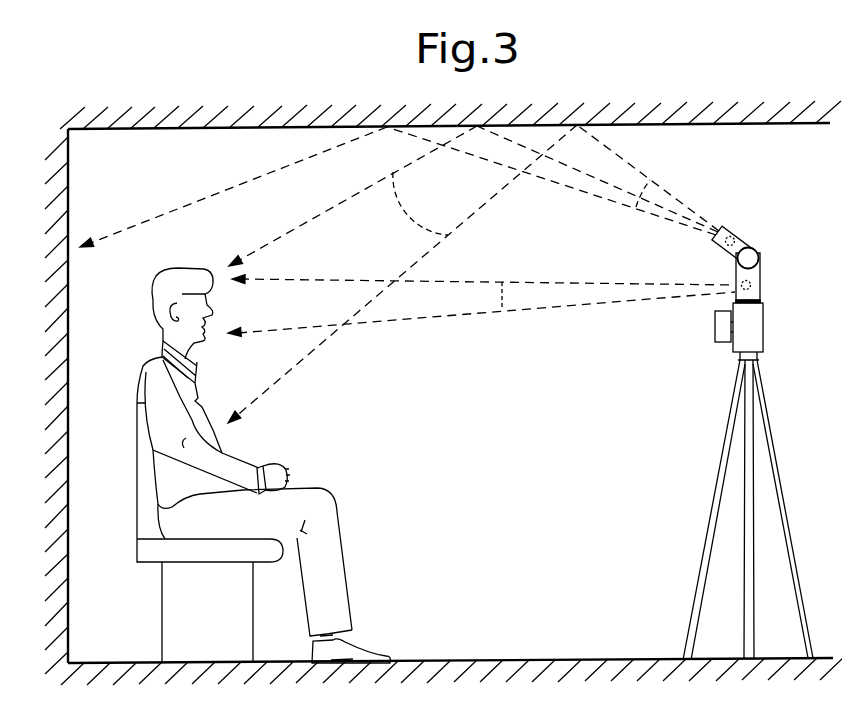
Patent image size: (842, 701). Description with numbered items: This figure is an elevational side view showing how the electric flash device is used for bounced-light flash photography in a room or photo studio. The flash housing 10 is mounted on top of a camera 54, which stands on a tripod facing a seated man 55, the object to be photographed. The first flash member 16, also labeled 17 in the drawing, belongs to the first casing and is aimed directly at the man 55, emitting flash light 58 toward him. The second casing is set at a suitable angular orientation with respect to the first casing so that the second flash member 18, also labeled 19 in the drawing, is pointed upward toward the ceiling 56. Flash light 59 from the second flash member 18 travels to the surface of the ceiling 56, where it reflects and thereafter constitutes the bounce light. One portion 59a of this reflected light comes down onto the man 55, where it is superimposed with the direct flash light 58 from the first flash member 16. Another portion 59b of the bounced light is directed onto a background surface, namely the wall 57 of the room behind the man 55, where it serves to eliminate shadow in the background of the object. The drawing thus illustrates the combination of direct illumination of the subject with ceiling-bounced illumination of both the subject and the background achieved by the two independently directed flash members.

The flash housing 10 is at (776, 250).
The first flash member 16 is at (788, 280).
The infrared sensor 17 is at (760, 292).
The second flash member 18 is at (749, 226).
The ultrasonic transducer 19 is at (750, 215).
The camera 54 is at (753, 342).
The man 55 is at (192, 421).
The ceiling 56 is at (742, 124).
The wall 57 is at (70, 352).
The flash light 58 is at (501, 296).
The flash light 59 is at (641, 193).
The portion of reflected light 59a is at (405, 203).
The portion of bounced light 59b is at (246, 182).